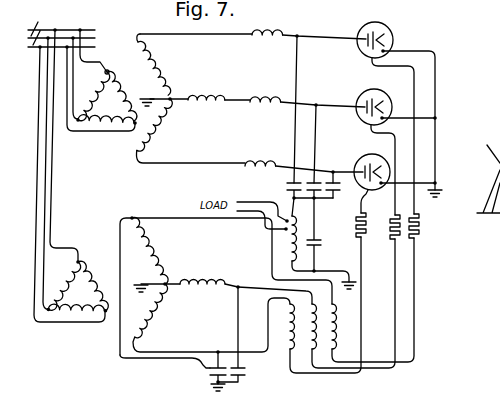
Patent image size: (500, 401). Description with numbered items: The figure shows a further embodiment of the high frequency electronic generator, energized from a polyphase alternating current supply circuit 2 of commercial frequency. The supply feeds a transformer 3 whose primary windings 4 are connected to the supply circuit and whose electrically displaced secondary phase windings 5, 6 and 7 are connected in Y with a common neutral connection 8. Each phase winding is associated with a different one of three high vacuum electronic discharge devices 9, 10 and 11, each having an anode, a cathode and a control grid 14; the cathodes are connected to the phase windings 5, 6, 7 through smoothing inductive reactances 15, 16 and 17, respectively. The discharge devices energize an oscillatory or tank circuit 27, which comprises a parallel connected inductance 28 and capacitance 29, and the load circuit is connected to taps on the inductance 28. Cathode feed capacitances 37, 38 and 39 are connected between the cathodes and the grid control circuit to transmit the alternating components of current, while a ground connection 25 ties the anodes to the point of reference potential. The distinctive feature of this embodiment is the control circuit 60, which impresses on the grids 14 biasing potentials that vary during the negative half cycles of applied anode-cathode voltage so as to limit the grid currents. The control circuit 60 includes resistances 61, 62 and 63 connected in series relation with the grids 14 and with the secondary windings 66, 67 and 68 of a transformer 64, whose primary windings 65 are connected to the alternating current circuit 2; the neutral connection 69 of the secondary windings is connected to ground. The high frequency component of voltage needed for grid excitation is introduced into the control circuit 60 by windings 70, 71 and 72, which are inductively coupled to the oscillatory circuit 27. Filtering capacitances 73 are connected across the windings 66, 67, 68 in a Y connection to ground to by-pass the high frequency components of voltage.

The polyphase alternating current supply circuit 2 is at (61, 27).
The transformer 3 is at (107, 94).
The primary windings 4 is at (106, 110).
The secondary phase winding 5 is at (158, 60).
The secondary phase winding 6 is at (198, 107).
The secondary phase winding 7 is at (155, 142).
The neutral connection 8 is at (170, 104).
The electronic discharge device 9 is at (393, 27).
The electronic discharge device 10 is at (388, 95).
The electronic discharge device 11 is at (375, 157).
The control grid 14 is at (360, 30).
The smoothing inductive reactance 15 is at (267, 49).
The smoothing inductive reactance 16 is at (268, 108).
The smoothing inductive reactance 17 is at (258, 158).
The ground connection 25 is at (436, 188).
The oscillatory circuit 27 is at (336, 234).
The inductance 28 is at (303, 229).
The capacitance 29 is at (322, 242).
The cathode feed capacitance 37 is at (284, 182).
The cathode feed capacitance 38 is at (309, 173).
The cathode feed capacitance 39 is at (335, 190).
The control circuit 60 is at (242, 265).
The resistance 61 is at (418, 225).
The resistance 62 is at (393, 233).
The resistance 63 is at (370, 220).
The transformer 64 is at (110, 260).
The primary windings 65 is at (79, 285).
The secondary winding 66 is at (157, 252).
The secondary winding 67 is at (200, 290).
The secondary winding 68 is at (157, 330).
The neutral connection 69 is at (167, 282).
The winding 70 is at (333, 335).
The winding 71 is at (305, 340).
The winding 72 is at (288, 338).
The capacitances 73 is at (193, 372).